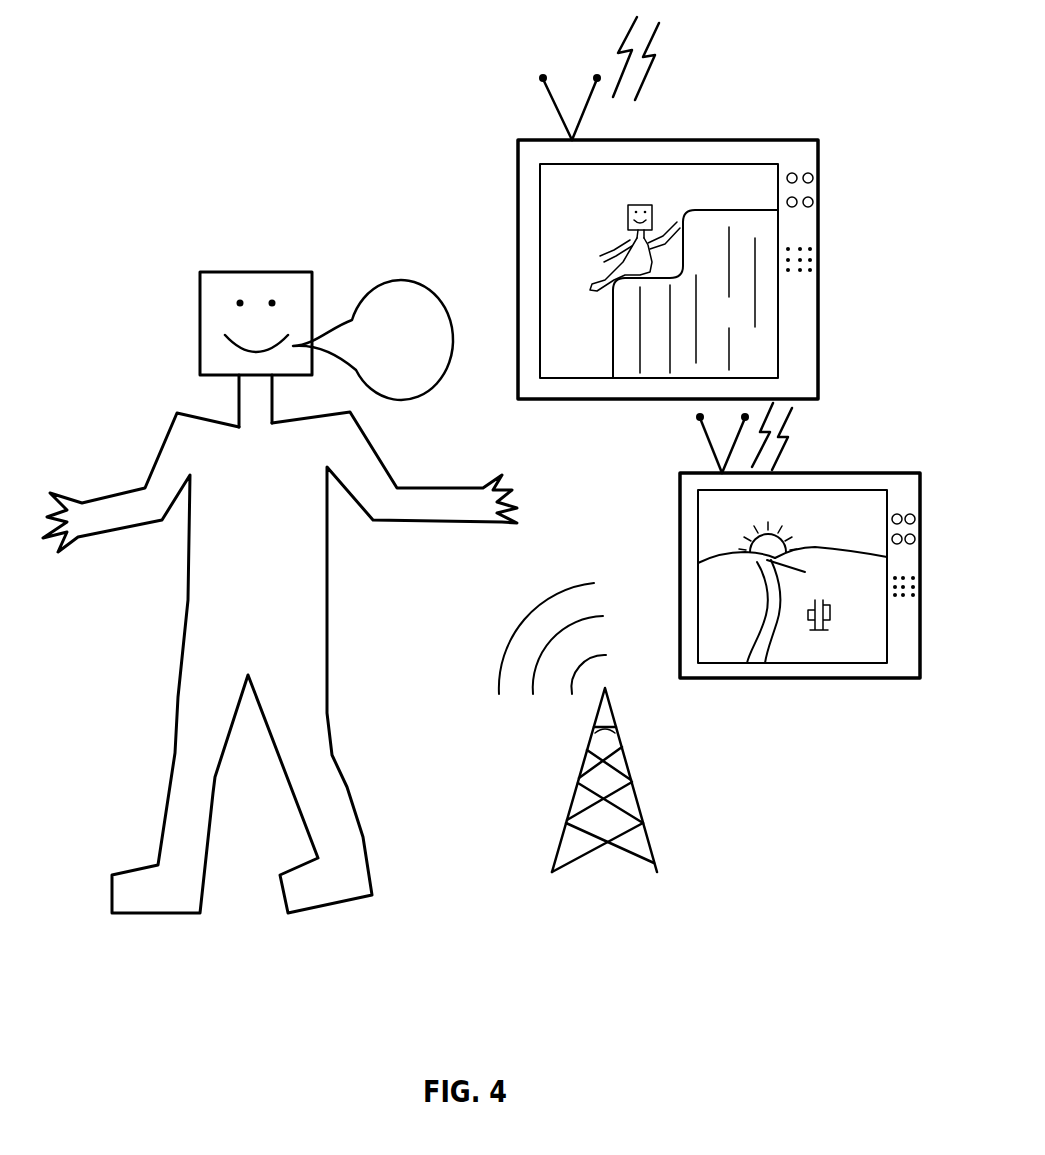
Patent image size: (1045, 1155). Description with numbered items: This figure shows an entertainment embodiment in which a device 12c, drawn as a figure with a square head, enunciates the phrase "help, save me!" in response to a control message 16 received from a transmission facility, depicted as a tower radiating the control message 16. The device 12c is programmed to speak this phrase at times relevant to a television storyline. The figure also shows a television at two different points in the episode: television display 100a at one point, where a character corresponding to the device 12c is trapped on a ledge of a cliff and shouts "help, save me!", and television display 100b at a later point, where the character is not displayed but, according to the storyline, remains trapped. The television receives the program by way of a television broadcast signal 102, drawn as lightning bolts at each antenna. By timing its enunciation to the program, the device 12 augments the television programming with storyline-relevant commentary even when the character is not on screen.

The device 12 is at (650, 835).
The device 12c is at (332, 670).
The control message 16 is at (511, 567).
The television display 100a is at (818, 323).
The television display 100b is at (680, 517).
The television broadcast signal 102 is at (660, 37).